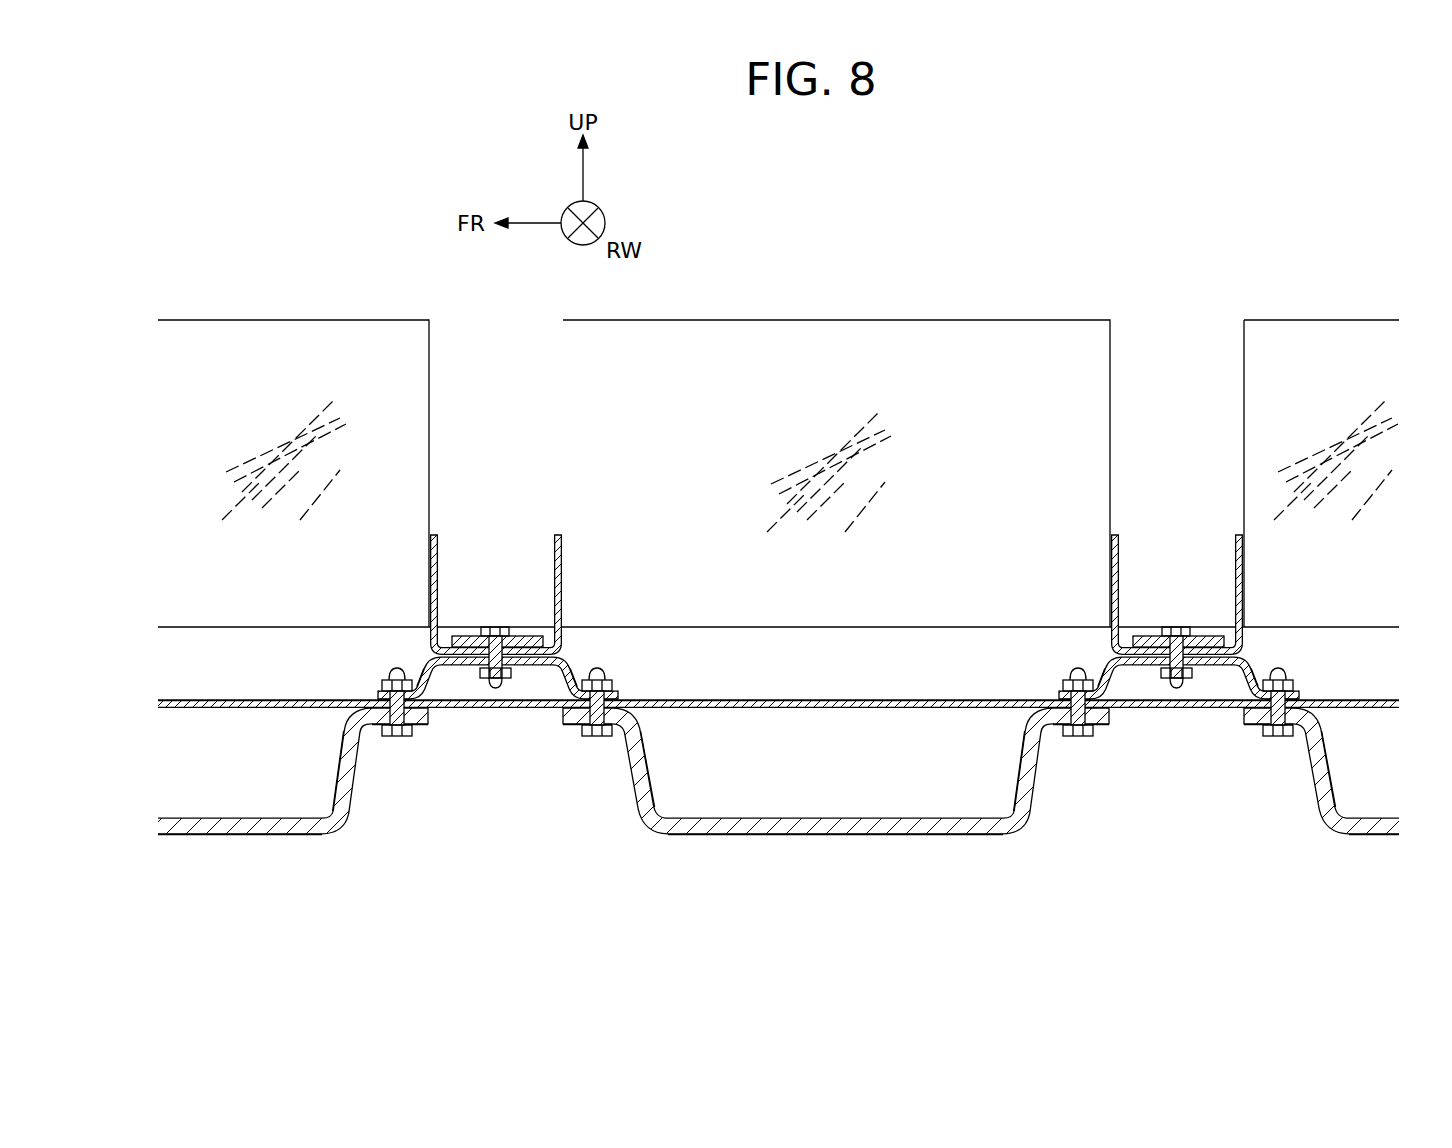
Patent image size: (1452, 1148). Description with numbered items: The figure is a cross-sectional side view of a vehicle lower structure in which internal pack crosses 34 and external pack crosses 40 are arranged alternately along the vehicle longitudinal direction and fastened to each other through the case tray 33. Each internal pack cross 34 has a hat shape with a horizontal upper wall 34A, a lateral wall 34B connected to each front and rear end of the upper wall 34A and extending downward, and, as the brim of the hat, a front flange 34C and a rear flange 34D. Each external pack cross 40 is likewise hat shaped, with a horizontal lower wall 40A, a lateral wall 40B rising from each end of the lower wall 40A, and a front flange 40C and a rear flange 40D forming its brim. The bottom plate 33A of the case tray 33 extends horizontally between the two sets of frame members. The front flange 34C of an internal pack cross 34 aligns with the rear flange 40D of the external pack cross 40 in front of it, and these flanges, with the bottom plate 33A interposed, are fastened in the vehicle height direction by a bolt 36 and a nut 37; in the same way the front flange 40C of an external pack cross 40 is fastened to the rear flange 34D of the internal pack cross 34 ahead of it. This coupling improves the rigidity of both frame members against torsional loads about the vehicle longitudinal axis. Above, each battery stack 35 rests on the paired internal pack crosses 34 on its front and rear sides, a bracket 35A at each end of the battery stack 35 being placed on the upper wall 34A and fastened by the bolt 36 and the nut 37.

The case tray 33 is at (778, 675).
The bottom plate 33A is at (772, 700).
The internal pack cross 34 is at (470, 667).
The upper wall 34A is at (532, 634).
The lateral wall 34B is at (433, 663).
The front flange 34C is at (380, 695).
The rear flange 34D is at (620, 695).
The battery stack 35 is at (248, 318).
The bracket 35A is at (551, 533).
The bolt 36 is at (478, 627).
The nut 37 is at (384, 689).
The external pack cross 40 is at (336, 830).
The lower wall 40A is at (862, 834).
The lateral wall 40B is at (350, 772).
The front flange 40C is at (566, 724).
The rear flange 40D is at (438, 722).